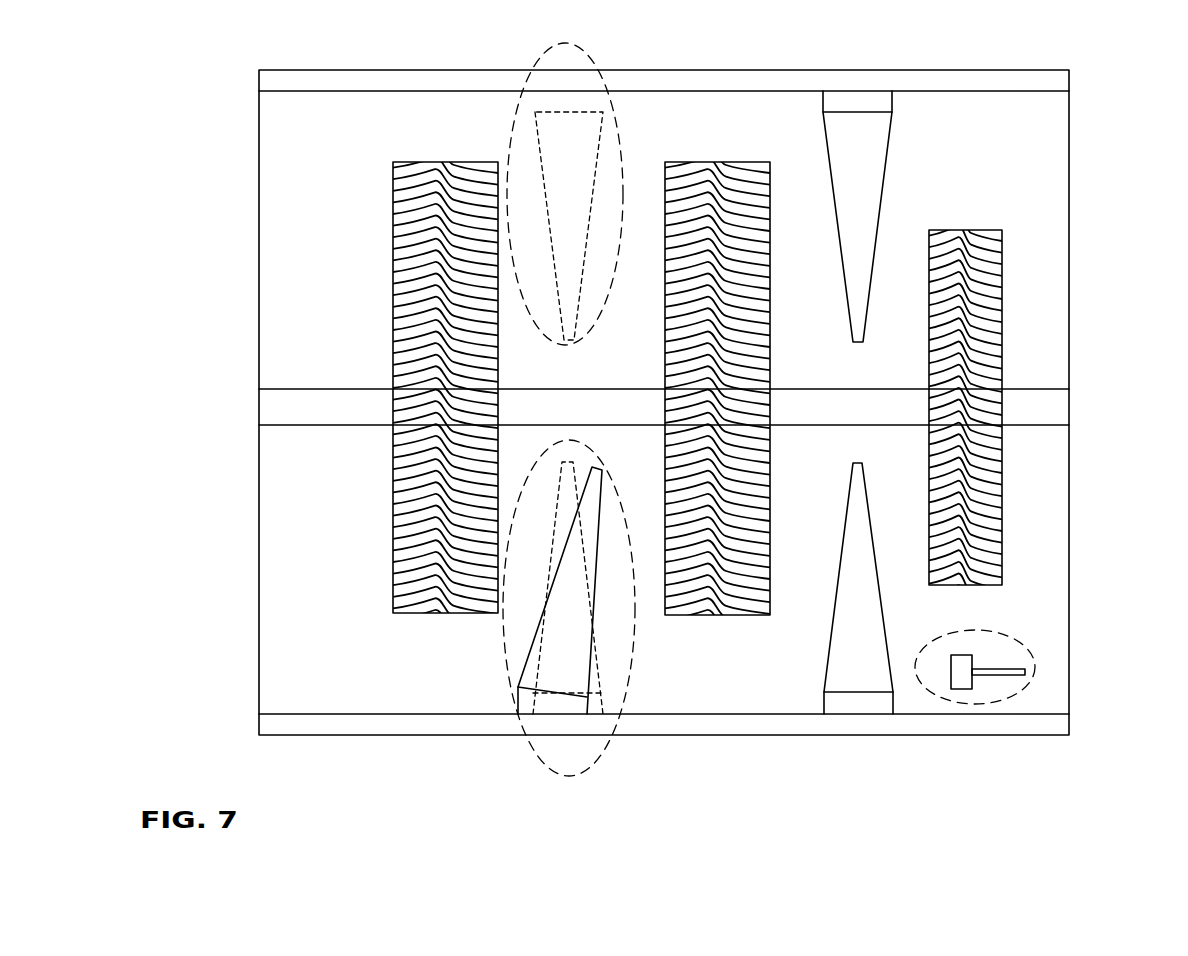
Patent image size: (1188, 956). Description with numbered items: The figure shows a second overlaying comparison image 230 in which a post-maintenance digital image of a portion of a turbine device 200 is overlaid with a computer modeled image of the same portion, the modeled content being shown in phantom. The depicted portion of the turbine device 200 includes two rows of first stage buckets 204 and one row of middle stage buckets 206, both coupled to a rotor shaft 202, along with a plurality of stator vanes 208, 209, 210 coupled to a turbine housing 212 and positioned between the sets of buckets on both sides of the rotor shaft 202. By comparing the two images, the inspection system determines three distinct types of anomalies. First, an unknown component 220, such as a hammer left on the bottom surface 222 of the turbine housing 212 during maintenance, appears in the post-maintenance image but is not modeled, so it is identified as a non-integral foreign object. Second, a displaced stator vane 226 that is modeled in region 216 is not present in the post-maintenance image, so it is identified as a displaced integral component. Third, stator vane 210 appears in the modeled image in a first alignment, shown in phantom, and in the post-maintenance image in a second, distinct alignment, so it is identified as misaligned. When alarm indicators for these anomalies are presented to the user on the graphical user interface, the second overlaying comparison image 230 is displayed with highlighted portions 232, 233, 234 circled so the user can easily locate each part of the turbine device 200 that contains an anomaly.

The turbine device 200 is at (221, 186).
The rotor shaft 202 is at (572, 422).
The first stage buckets 204 is at (665, 373).
The middle stage buckets 206 is at (983, 332).
The stator vane 208 is at (840, 137).
The stator vane 209 is at (848, 677).
The stator vane 210 is at (593, 493).
The turbine housing 212 is at (722, 722).
The region 216 is at (506, 118).
The unknown component 220 is at (962, 688).
The bottom surface 222 is at (1037, 582).
The displaced stator vane 226 is at (590, 148).
The second overlaying comparison image 230 is at (259, 537).
The highlighted portion 232 is at (1035, 663).
The highlighted portion 233 is at (548, 52).
The highlighted portion 234 is at (568, 776).